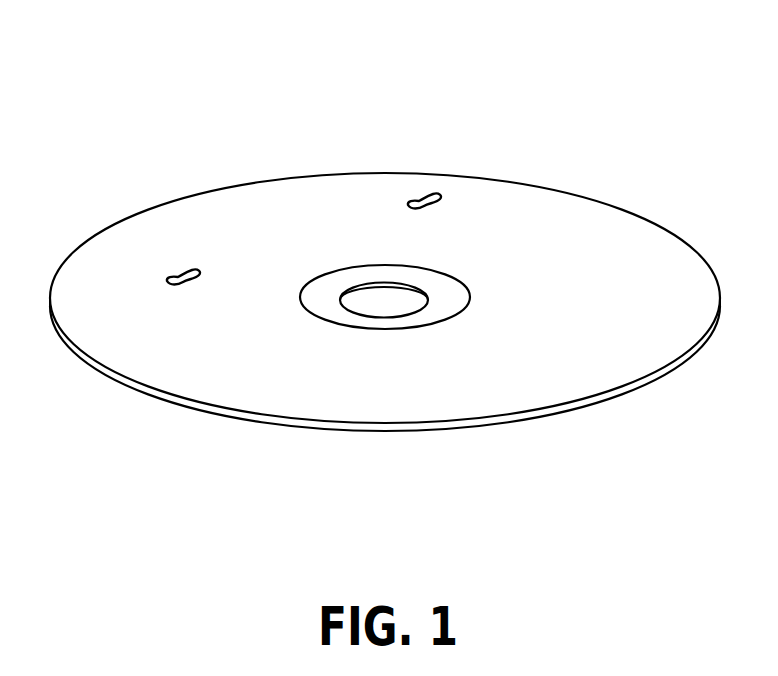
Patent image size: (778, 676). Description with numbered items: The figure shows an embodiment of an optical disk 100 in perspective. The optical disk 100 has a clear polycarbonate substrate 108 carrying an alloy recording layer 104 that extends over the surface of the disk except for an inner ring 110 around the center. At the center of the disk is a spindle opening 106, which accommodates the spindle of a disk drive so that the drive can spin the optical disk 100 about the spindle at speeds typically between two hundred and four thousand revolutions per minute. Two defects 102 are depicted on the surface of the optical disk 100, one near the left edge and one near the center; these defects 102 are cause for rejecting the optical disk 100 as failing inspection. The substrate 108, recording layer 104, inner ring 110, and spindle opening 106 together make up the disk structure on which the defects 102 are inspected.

The optical disk 100 is at (182, 197).
The defects 102 is at (175, 272).
The alloy recording layer 104 is at (592, 247).
The spindle opening 106 is at (383, 278).
The clear polycarbonate substrate 108 is at (447, 297).
The inner ring 110 is at (392, 330).